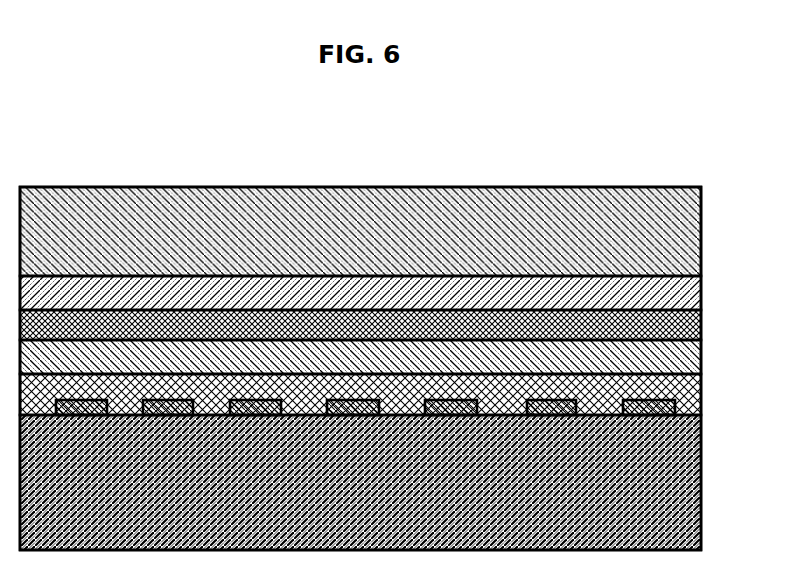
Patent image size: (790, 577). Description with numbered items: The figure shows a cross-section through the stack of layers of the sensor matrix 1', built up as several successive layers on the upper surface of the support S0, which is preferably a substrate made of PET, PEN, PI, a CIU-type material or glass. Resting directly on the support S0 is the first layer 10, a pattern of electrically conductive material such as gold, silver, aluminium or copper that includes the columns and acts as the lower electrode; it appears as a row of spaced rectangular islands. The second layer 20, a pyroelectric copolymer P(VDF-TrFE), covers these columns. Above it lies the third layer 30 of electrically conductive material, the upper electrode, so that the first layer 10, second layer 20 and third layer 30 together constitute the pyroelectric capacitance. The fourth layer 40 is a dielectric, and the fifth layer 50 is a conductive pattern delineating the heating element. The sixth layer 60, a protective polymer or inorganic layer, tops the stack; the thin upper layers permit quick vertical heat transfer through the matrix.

The electronic device 1' is at (360, 321).
The sixth layer 60 is at (683, 232).
The fifth layer 50 is at (683, 291).
The fourth layer 40 is at (681, 325).
The third layer 30 is at (683, 358).
The second layer 20 is at (683, 396).
The first layer 10 is at (648, 414).
The substrate S0 is at (685, 481).